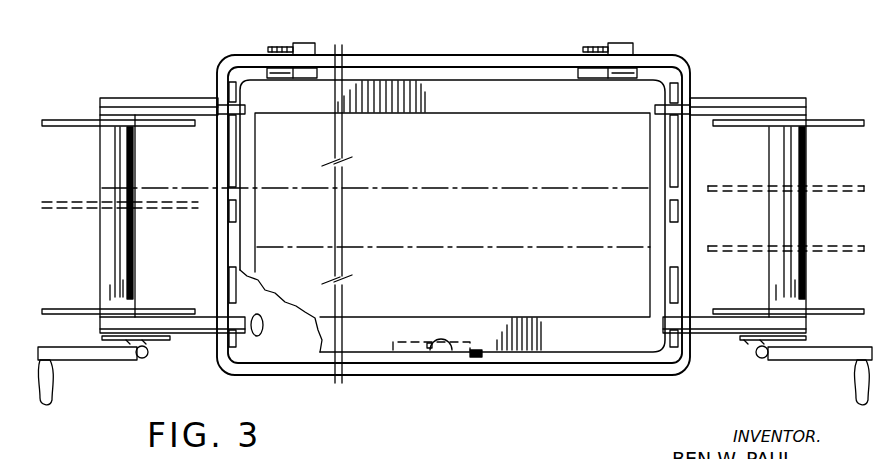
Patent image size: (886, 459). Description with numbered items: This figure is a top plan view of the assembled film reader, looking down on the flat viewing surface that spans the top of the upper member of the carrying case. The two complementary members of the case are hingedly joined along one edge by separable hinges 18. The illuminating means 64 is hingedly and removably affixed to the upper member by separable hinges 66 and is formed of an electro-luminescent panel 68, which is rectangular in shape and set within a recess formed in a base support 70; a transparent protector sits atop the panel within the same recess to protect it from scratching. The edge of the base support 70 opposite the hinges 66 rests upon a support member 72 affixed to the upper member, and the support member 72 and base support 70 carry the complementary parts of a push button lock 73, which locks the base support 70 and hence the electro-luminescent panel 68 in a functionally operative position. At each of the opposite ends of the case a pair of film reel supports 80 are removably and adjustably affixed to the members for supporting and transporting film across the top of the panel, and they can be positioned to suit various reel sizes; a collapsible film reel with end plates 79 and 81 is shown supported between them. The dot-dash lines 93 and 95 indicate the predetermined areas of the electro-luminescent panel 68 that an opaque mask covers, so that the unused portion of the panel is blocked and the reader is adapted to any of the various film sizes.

The separable hinges 18 is at (307, 43).
The separable hinges 66 is at (310, 70).
The illuminating means 64 is at (430, 98).
The base support 70 is at (635, 93).
The electro-luminescent panel 68 is at (620, 133).
The film reel supports 80 is at (127, 96).
The end plate 81 is at (70, 120).
The end plate 79 is at (830, 120).
The dot-dash lines 93 is at (458, 188).
The dot-dash lines 95 is at (460, 247).
The support member 72 is at (403, 357).
The push button lock 73 is at (452, 350).